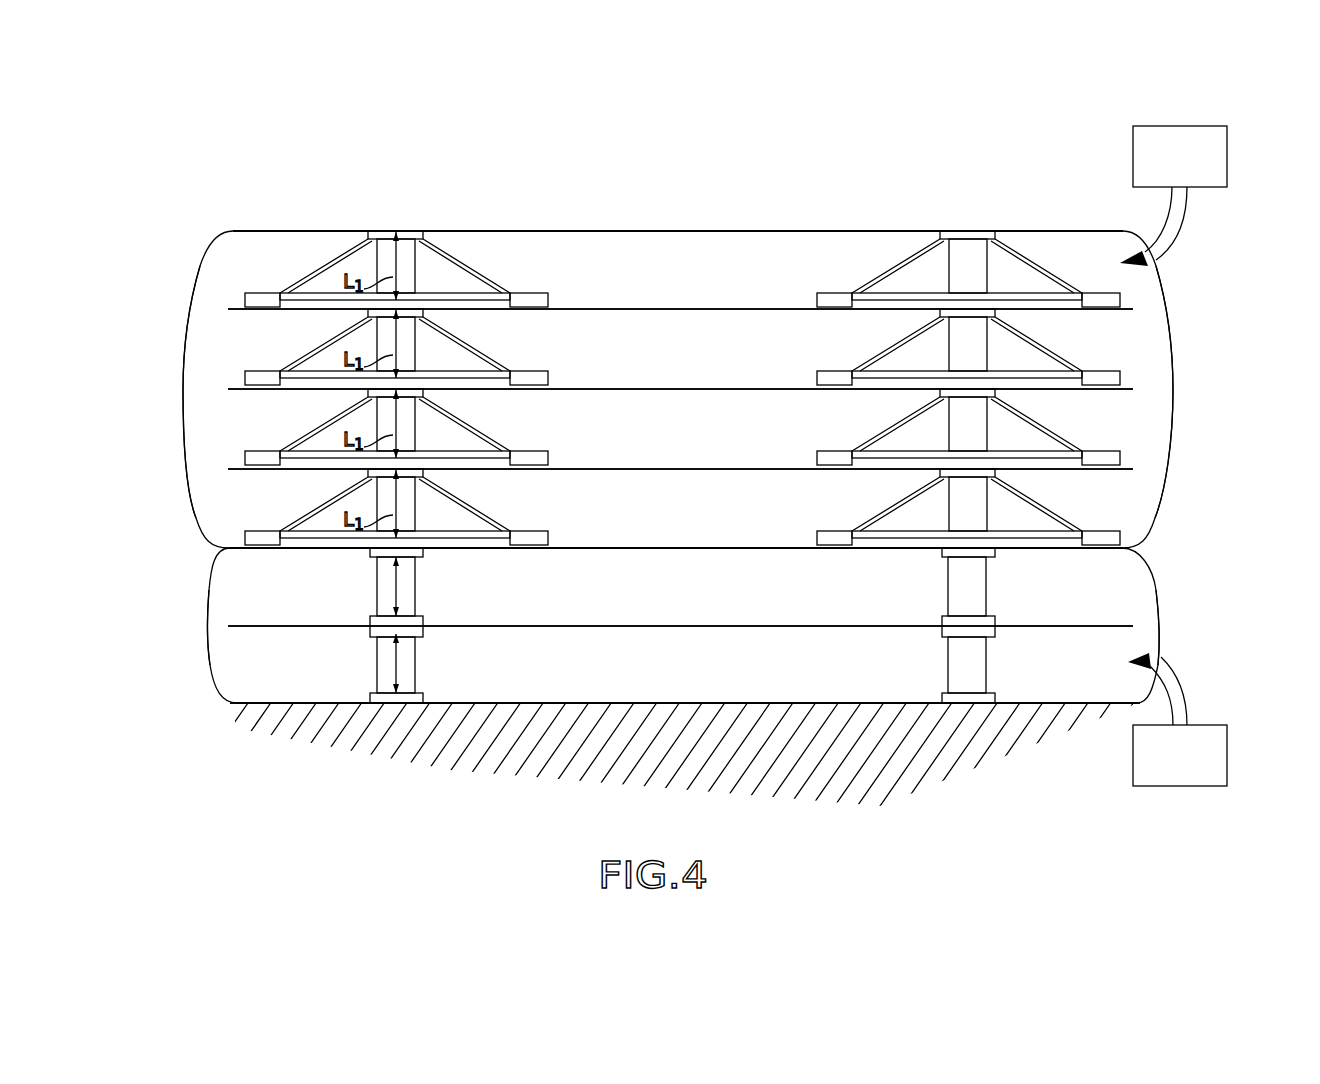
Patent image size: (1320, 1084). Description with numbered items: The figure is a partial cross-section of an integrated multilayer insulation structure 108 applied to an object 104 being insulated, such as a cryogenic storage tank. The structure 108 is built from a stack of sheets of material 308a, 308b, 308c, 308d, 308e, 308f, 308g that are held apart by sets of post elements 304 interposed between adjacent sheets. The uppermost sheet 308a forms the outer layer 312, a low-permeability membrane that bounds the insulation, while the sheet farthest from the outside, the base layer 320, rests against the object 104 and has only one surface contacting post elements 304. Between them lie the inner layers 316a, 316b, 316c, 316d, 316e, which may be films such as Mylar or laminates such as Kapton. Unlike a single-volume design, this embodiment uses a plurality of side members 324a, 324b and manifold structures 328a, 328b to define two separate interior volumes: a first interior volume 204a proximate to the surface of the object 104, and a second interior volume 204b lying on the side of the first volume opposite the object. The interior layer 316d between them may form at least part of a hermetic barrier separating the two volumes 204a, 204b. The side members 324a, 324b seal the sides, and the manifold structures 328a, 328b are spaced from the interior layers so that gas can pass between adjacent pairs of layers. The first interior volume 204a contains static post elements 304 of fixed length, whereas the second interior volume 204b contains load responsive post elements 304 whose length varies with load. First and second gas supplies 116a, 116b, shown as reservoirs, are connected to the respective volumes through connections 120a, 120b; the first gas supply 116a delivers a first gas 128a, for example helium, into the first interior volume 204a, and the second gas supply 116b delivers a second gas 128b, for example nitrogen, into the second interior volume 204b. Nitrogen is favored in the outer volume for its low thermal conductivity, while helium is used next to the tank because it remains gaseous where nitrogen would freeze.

The object being insulated 104 is at (425, 741).
The integrated multilayer insulation structure 108 is at (470, 212).
The first gas supply 116a is at (1133, 777).
The second gas supply 116b is at (1133, 133).
The air duct 120a is at (1187, 705).
The air duct 120b is at (1187, 218).
The first gas 128a is at (1150, 655).
The second gas 128b is at (1150, 258).
The first interior volume 204a is at (218, 595).
The second interior volume 204b is at (242, 243).
The post elements 304 is at (948, 595).
The sheet of material 308a is at (762, 231).
The sheet of material 308b is at (762, 309).
The sheet of material 308c is at (762, 389).
The sheet of material 308d is at (762, 469).
The sheet of material 308e is at (762, 548).
The sheet of material 308f is at (762, 626).
The sheet of material 308g is at (762, 703).
The outer layer 312 is at (661, 231).
The inner layer 316a is at (661, 309).
The inner layer 316b is at (661, 389).
The inner layer 316c is at (661, 469).
The interior layer 316d is at (661, 548).
The inner layer 316e is at (661, 626).
The base layer 320 is at (661, 703).
The side member 324a is at (210, 655).
The side member 324b is at (183, 352).
The manifold structure 328a is at (1158, 590).
The manifold structure 328b is at (1173, 393).